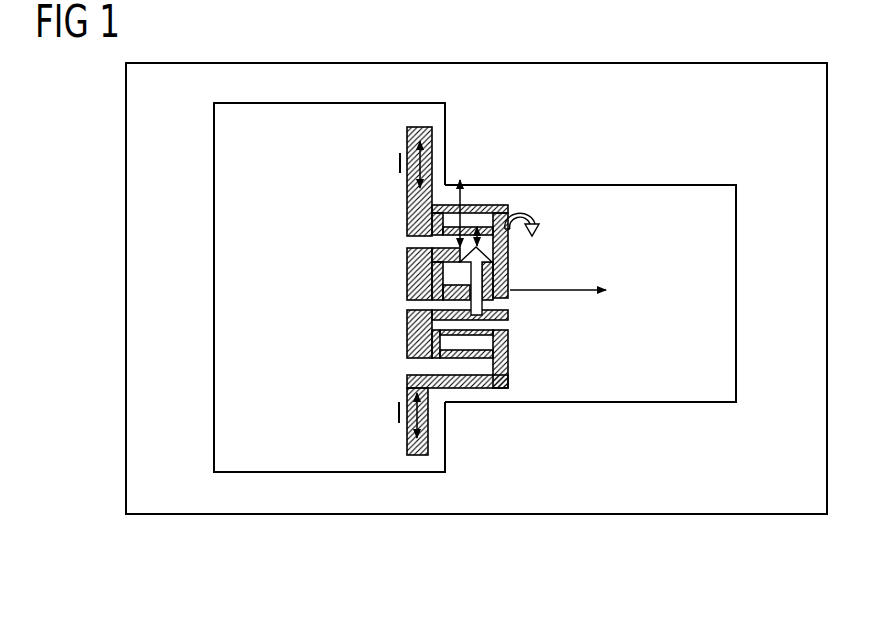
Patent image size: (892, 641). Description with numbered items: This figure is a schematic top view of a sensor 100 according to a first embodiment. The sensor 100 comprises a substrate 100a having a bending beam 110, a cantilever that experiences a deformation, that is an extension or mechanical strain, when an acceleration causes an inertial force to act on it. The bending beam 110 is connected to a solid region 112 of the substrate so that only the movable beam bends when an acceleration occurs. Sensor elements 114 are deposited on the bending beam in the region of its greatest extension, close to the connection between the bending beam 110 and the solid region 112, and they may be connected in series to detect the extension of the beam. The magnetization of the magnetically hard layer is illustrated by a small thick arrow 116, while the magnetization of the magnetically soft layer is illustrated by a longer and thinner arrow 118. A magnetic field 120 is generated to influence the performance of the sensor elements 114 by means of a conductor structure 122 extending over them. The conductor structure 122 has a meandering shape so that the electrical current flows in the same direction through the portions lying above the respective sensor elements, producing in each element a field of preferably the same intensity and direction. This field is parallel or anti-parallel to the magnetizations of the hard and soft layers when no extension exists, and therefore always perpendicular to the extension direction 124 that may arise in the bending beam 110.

The sensor 100 is at (124, 532).
The substrate 100a is at (127, 302).
The bending beam 110 is at (686, 192).
The solid region 112 is at (227, 300).
The sensor elements 114 is at (470, 239).
The magnetization of the magnetically hard layer 116 is at (506, 266).
The magnetization of the magnetically soft layer 118 is at (500, 239).
The magnetic field 120 is at (461, 191).
The conductor structure 122 is at (407, 444).
The extension direction 124 is at (553, 293).